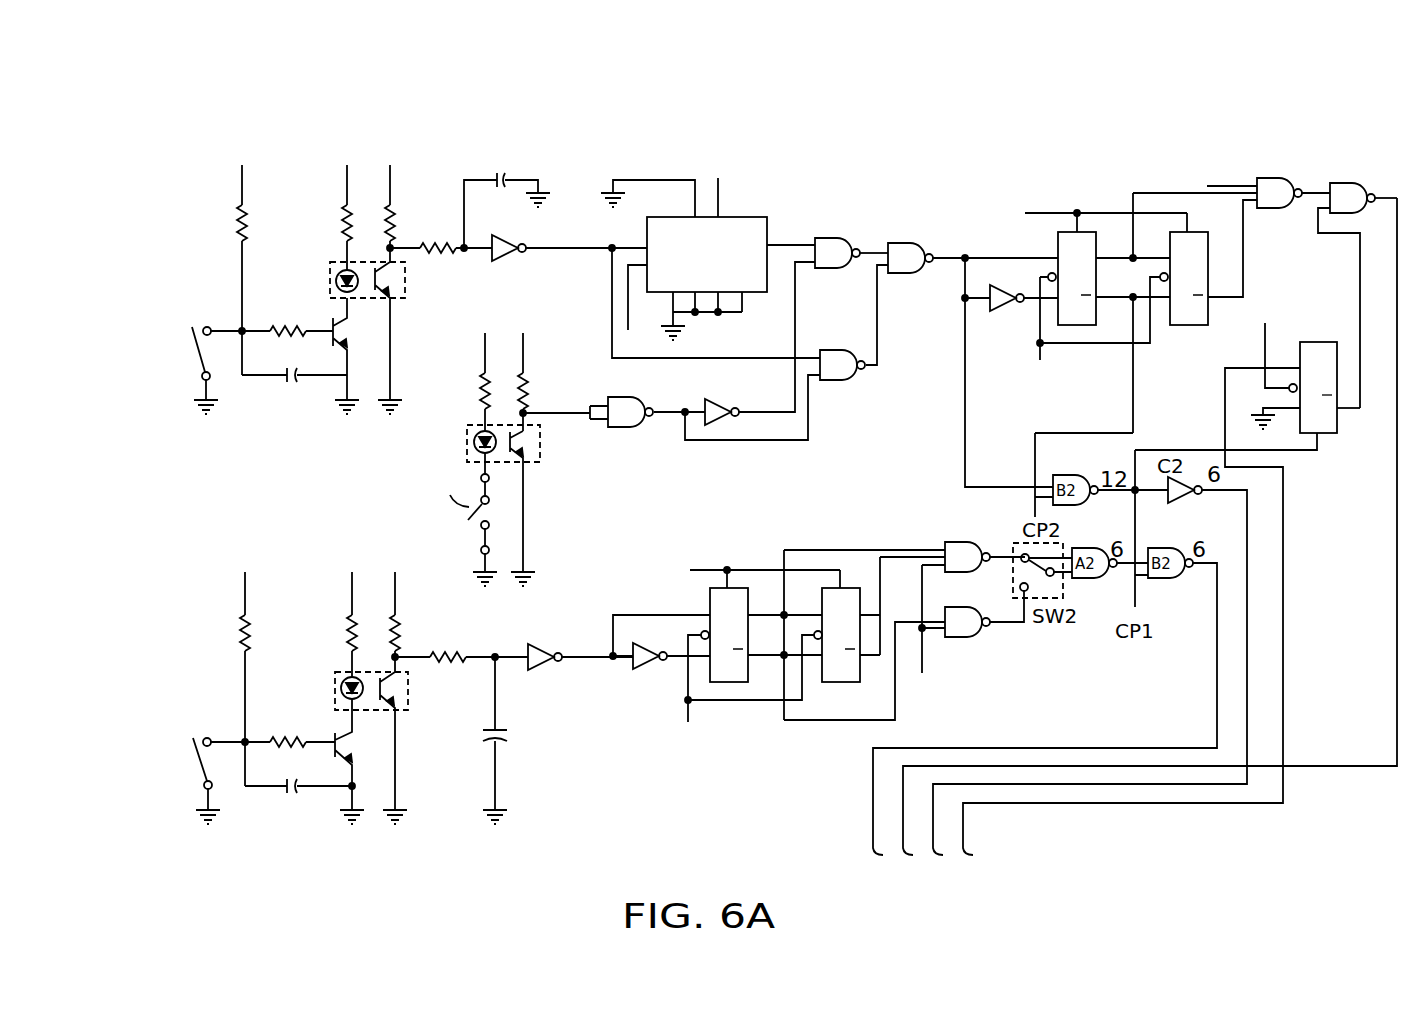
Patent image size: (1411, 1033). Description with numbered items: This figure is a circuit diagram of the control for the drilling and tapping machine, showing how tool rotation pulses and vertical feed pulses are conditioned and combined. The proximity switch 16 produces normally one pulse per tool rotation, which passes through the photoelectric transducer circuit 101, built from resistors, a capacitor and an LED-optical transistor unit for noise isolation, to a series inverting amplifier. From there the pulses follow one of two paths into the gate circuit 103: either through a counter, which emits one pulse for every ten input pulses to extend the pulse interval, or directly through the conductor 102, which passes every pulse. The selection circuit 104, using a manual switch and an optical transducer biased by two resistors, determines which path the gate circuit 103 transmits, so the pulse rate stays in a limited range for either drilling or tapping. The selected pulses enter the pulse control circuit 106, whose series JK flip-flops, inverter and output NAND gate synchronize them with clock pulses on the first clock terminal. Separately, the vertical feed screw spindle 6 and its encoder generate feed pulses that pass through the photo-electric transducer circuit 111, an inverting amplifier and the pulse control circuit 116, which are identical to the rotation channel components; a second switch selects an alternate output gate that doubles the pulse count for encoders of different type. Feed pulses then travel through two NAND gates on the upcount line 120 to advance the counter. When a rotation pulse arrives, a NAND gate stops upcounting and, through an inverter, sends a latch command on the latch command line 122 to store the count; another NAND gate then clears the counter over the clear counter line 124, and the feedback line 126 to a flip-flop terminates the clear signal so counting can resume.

The proximity switch 16 is at (190, 351).
The photoelectric transducer circuit 101 is at (395, 203).
The conductor 102 is at (608, 313).
The gate circuit 103 is at (911, 226).
The selection circuit 104 is at (466, 520).
The pulse control circuit 106 is at (1166, 172).
The photo-electric transducer circuit 111 is at (404, 591).
The pulse control circuit 116 is at (757, 565).
The upcount line 120 is at (1040, 747).
The latch command line 122 is at (1048, 787).
The clear counter line 124 is at (1396, 629).
The feedback line 126 is at (1225, 397).
The vertical feed screw spindle 6 is at (193, 768).